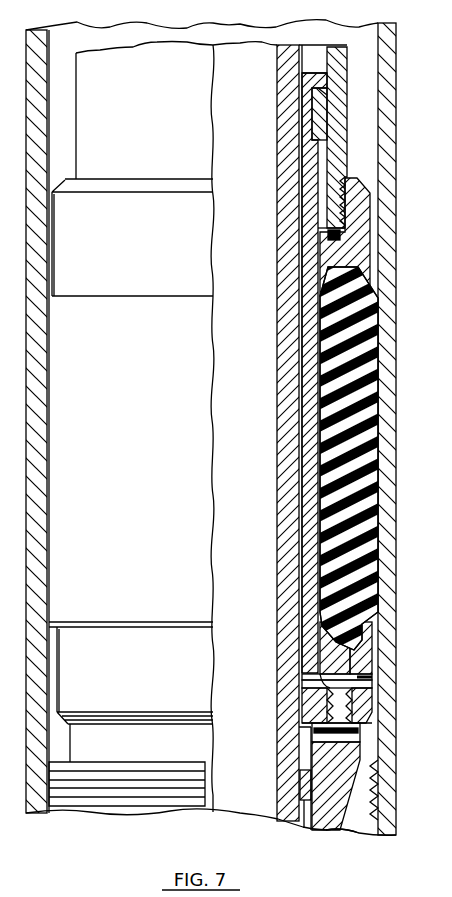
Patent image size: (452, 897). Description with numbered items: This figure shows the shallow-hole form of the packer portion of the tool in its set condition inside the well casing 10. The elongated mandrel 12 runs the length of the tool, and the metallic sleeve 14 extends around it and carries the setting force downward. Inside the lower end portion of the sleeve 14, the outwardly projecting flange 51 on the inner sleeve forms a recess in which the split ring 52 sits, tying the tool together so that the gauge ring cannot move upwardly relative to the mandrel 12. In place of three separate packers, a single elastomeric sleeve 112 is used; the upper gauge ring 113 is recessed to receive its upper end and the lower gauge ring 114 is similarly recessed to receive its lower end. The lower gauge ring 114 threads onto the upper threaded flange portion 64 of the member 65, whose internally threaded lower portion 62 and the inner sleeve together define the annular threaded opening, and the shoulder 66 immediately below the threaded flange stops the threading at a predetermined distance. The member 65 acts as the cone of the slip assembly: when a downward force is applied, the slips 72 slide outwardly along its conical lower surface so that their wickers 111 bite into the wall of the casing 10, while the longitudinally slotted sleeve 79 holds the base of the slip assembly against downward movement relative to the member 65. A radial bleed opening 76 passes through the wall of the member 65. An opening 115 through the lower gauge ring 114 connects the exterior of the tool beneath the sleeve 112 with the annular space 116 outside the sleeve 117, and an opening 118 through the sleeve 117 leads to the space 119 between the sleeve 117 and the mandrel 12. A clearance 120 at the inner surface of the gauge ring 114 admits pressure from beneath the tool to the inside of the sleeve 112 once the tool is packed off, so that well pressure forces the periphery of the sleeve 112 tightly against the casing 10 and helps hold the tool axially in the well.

The well casing 10 is at (396, 57).
The mandrel 12 is at (283, 443).
The metallic sleeve 14 is at (348, 150).
The outwardly projecting flange 51 is at (314, 77).
The split ring 52 is at (313, 105).
The lower portion of the gauge ring 62 is at (371, 703).
The upper threaded flange portion 64 is at (356, 718).
The member 65 is at (364, 750).
The shoulder 66 is at (323, 717).
The slips 72 is at (356, 822).
The radial bleed opening 76 is at (316, 742).
The longitudinally slotted sleeve 79 is at (304, 790).
The wickers 111 is at (150, 778).
The elastomeric sleeve 112 is at (373, 370).
The upper gauge ring 113 is at (366, 222).
The lower gauge ring 114 is at (371, 655).
The opening 115 is at (212, 678).
The annular space 116 is at (326, 678).
The sleeve 117 is at (308, 517).
The opening 118 is at (321, 683).
The space 119 is at (301, 575).
The clearance 120 is at (321, 640).